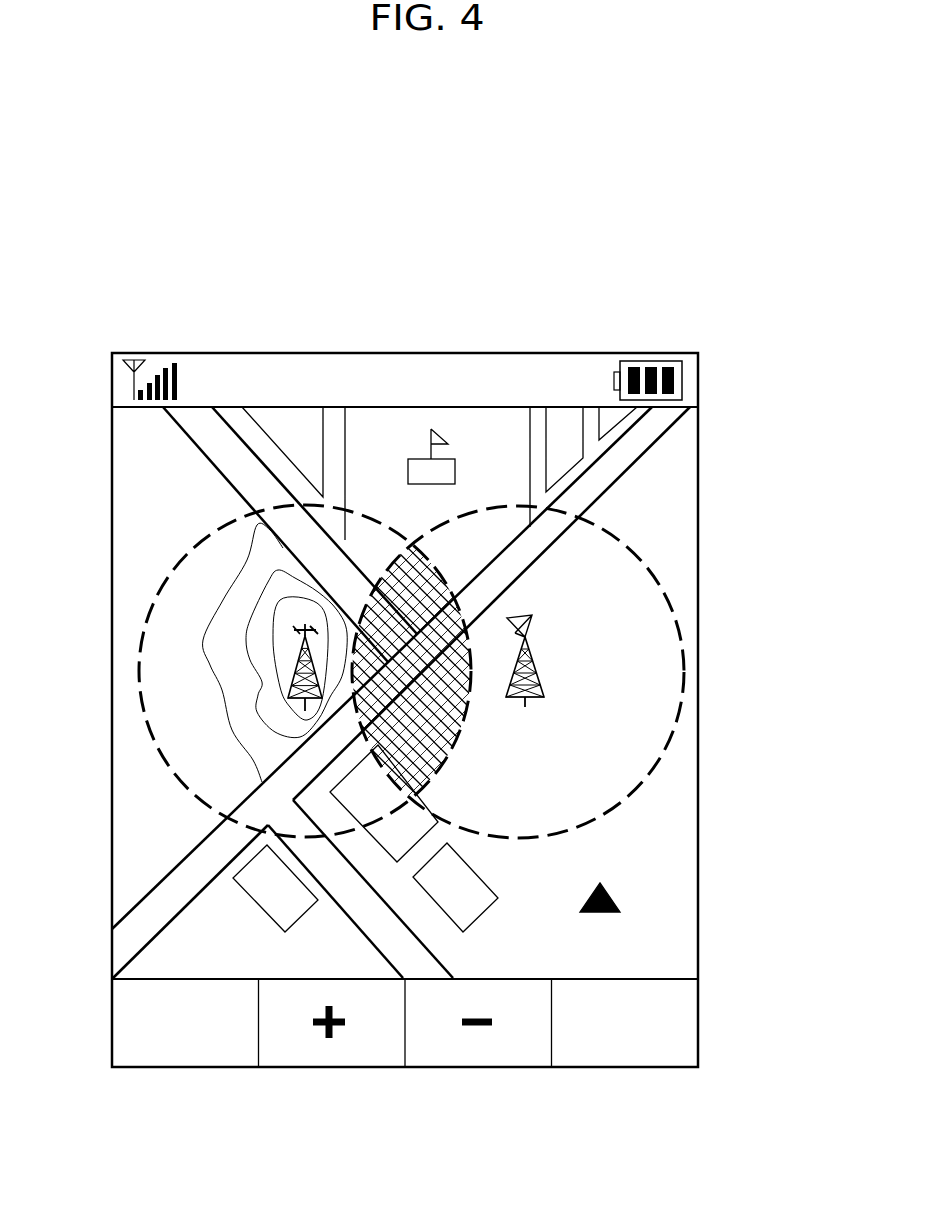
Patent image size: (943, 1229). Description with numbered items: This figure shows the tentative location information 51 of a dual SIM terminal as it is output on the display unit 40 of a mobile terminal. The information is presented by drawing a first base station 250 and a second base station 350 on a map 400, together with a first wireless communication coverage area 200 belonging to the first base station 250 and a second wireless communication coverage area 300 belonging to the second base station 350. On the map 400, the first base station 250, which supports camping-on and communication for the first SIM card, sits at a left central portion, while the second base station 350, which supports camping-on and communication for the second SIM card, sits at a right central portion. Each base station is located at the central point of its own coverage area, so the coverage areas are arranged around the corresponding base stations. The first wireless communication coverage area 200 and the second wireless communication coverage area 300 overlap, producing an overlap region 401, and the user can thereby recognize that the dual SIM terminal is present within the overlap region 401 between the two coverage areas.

The display unit 40 is at (727, 455).
The map 400 is at (665, 820).
The overlap region 401 is at (437, 566).
The first wireless communication coverage area 200 is at (178, 693).
The first base station 250 is at (290, 680).
The second wireless communication coverage area 300 is at (587, 747).
The second base station 350 is at (537, 668).
The tentative location information 51 is at (608, 897).